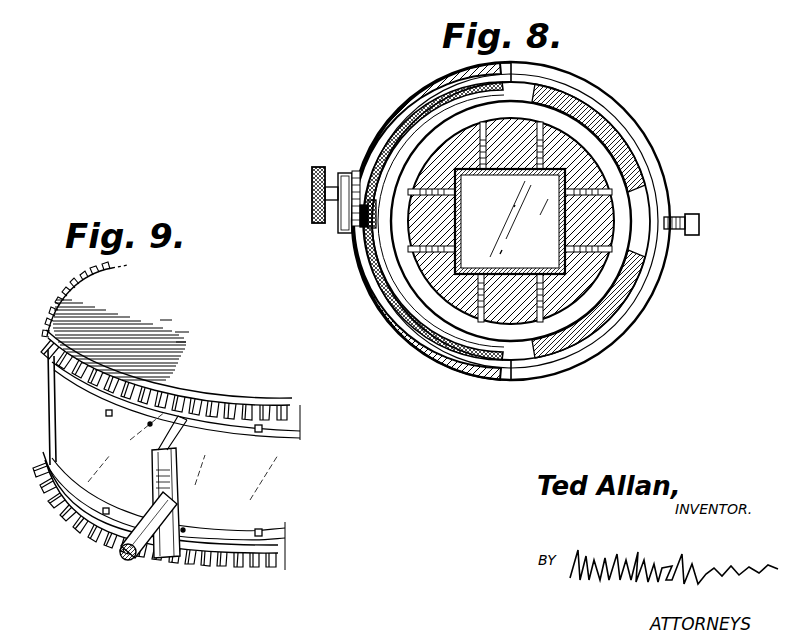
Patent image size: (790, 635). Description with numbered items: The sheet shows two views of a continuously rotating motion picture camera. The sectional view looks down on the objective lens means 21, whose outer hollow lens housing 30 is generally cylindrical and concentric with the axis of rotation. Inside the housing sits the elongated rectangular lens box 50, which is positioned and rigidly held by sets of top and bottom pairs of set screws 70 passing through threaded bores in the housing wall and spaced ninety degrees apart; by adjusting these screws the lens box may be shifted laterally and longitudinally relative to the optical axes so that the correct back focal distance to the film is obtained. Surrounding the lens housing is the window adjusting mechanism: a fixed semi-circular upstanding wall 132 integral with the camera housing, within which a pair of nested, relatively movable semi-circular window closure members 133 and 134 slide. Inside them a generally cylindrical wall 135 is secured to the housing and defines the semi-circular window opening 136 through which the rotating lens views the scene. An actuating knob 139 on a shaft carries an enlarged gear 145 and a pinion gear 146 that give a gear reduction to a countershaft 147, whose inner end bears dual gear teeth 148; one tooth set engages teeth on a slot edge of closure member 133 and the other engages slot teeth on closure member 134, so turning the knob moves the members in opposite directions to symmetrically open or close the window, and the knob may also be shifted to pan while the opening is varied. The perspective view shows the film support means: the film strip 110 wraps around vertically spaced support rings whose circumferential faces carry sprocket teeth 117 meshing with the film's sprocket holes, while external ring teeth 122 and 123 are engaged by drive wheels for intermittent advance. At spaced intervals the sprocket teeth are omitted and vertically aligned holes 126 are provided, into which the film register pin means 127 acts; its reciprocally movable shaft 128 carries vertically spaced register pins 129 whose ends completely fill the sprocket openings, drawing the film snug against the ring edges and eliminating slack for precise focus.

In FIG. 8, the objective lens means 21 is at (583, 222).
In FIG. 8, the lens housing 30 is at (567, 149).
In FIG. 8, the lens box 50 is at (450, 264).
In FIG. 8, the set screws 70 is at (545, 134).
In FIG. 9, the film strip 110 is at (92, 477).
In FIG. 9, the sprocket teeth 117 is at (263, 430).
In FIG. 9, the ring teeth 122 is at (248, 400).
In FIG. 9, the ring teeth 123 is at (228, 568).
In FIG. 9, the holes 126 is at (195, 430).
In FIG. 9, the film register pin means 127 is at (132, 561).
In FIG. 9, the shaft 128 is at (120, 546).
In FIG. 9, the register pins 129 is at (150, 422).
In FIG. 8, the semi-circular wall 132 is at (398, 130).
In FIG. 8, the window closure member 133 is at (420, 112).
In FIG. 8, the window closure member 134 is at (438, 96).
In FIG. 8, the cylindrical wall 135 is at (490, 360).
In FIG. 8, the window opening 136 is at (643, 164).
In FIG. 8, the actuating knob 139 is at (312, 185).
In FIG. 8, the enlarged gear 145 is at (356, 178).
In FIG. 8, the pinion gear 146 is at (349, 223).
In FIG. 8, the countershaft 147 is at (358, 235).
In FIG. 8, the dual gear teeth 148 is at (368, 257).